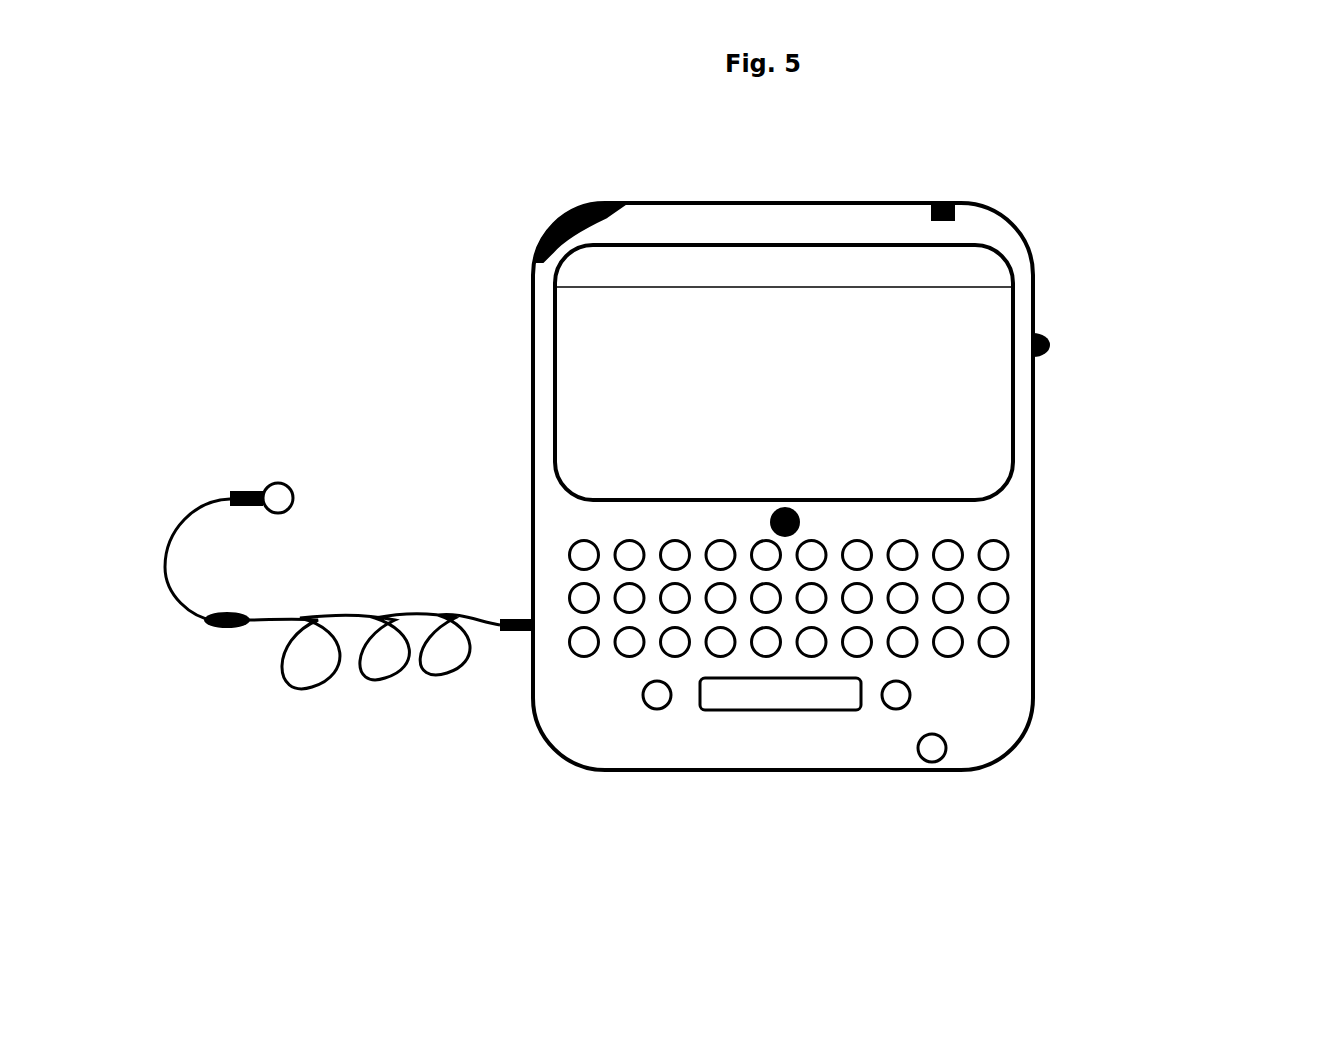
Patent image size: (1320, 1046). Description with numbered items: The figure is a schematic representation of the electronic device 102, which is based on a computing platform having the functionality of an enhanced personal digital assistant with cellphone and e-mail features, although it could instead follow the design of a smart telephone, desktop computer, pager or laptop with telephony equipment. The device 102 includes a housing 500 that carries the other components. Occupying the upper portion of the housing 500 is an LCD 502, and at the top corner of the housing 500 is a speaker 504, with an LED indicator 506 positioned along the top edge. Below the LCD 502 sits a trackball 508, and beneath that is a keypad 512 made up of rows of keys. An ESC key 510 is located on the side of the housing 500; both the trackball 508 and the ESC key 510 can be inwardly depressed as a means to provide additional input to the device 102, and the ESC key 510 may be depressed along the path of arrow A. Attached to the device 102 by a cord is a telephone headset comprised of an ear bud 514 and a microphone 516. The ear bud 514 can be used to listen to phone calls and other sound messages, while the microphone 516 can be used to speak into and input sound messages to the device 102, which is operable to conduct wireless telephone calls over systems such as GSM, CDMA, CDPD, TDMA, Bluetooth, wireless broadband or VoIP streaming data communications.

The electronic device 102 is at (753, 786).
The housing 500 is at (970, 746).
The LCD 502 is at (560, 486).
The speaker 504 is at (558, 225).
The LED indicator 506 is at (955, 210).
The trackball 508 is at (807, 515).
The ESC key 510 is at (1050, 345).
The keypad 512 is at (1013, 598).
The ear bud 514 is at (303, 497).
The microphone 516 is at (252, 612).